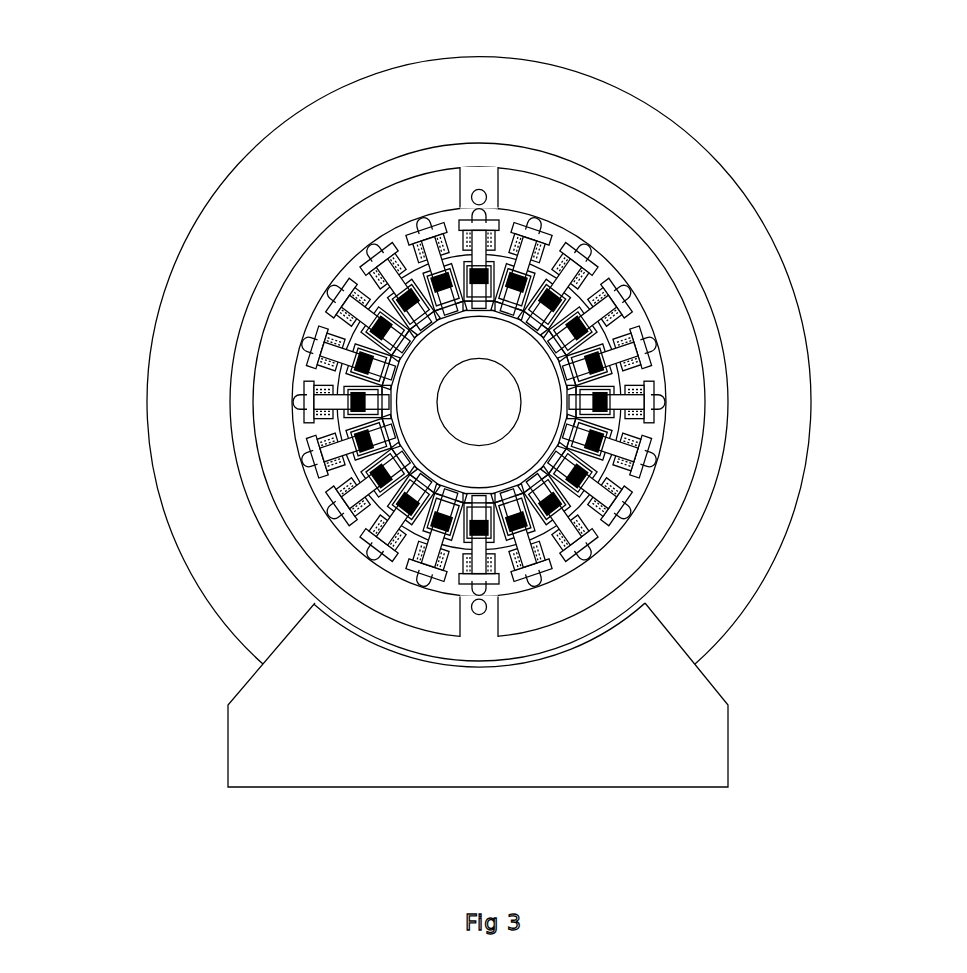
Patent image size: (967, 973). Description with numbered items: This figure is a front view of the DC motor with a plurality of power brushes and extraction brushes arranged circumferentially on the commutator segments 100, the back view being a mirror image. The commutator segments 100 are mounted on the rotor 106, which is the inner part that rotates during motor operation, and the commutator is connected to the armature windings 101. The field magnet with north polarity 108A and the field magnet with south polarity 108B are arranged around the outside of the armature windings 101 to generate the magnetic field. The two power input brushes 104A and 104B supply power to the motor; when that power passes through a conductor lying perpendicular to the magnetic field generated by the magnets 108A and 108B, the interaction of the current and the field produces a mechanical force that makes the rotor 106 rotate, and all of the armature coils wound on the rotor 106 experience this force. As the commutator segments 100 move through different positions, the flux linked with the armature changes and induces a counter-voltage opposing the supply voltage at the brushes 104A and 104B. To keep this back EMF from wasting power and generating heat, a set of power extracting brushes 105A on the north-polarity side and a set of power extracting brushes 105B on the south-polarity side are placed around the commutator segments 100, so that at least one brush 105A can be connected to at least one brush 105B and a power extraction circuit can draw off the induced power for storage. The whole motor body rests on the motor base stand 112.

The commutator segments 100 is at (497, 262).
The armature windings 101 is at (320, 332).
The power input brush 104A is at (330, 403).
The power input brush 104B is at (660, 403).
The power extracting brushes 105A is at (400, 515).
The power extracting brushes 105B is at (607, 333).
The rotor 106 is at (480, 404).
The field magnet with north polarity 108A is at (360, 225).
The field magnet with south polarity 108B is at (628, 549).
The motor base stand 112 is at (490, 738).